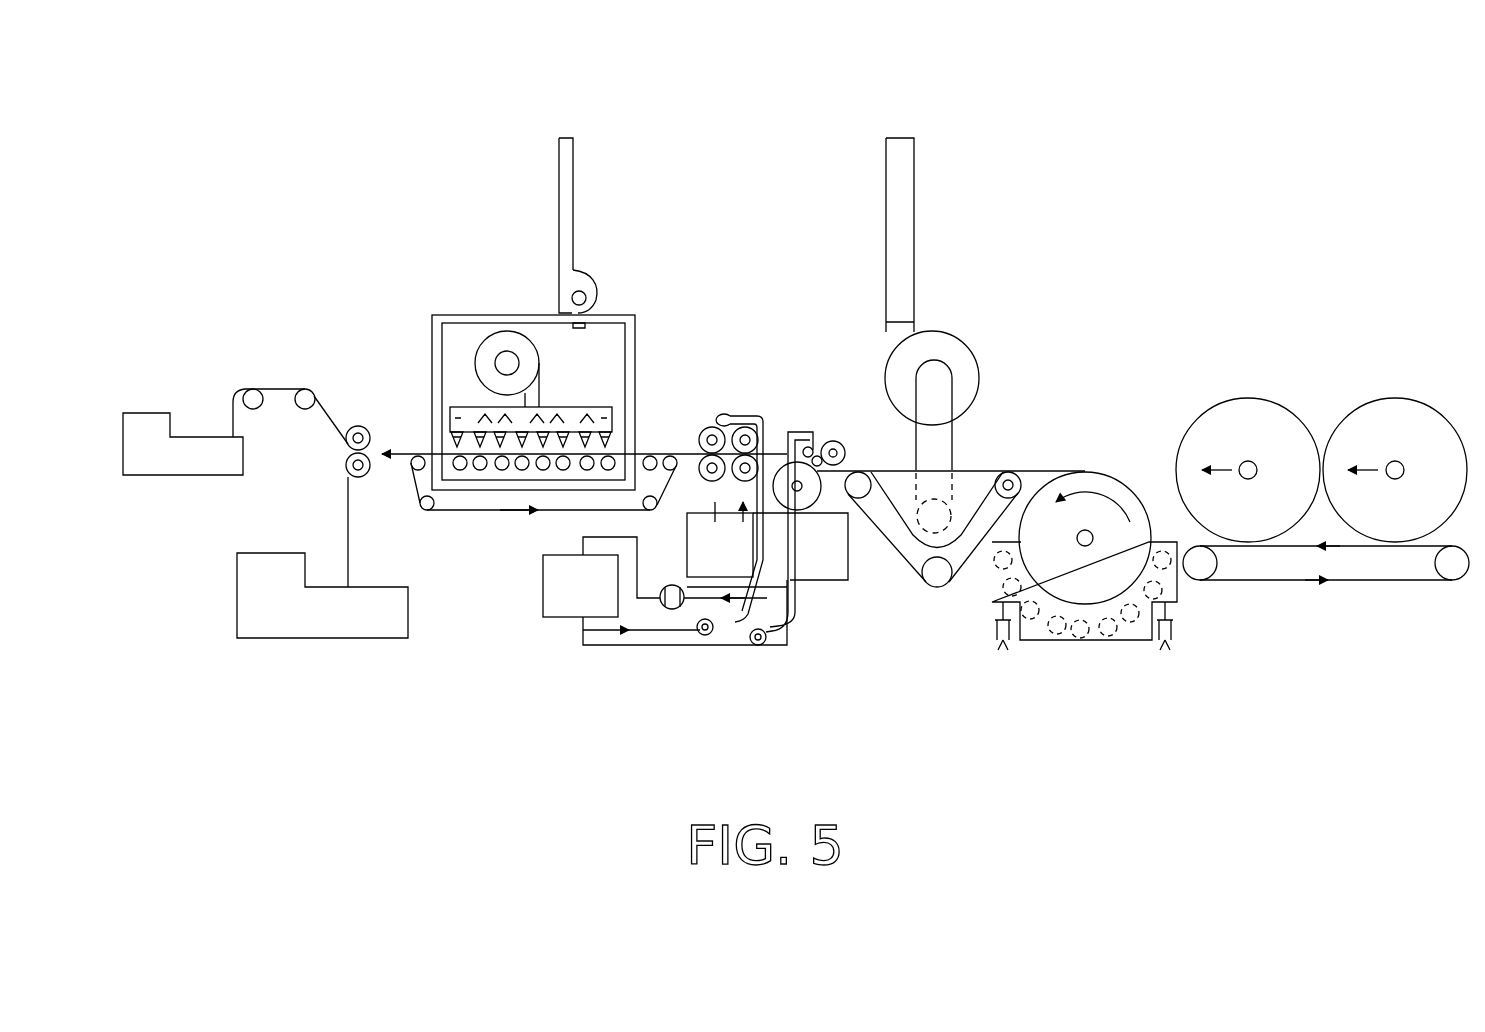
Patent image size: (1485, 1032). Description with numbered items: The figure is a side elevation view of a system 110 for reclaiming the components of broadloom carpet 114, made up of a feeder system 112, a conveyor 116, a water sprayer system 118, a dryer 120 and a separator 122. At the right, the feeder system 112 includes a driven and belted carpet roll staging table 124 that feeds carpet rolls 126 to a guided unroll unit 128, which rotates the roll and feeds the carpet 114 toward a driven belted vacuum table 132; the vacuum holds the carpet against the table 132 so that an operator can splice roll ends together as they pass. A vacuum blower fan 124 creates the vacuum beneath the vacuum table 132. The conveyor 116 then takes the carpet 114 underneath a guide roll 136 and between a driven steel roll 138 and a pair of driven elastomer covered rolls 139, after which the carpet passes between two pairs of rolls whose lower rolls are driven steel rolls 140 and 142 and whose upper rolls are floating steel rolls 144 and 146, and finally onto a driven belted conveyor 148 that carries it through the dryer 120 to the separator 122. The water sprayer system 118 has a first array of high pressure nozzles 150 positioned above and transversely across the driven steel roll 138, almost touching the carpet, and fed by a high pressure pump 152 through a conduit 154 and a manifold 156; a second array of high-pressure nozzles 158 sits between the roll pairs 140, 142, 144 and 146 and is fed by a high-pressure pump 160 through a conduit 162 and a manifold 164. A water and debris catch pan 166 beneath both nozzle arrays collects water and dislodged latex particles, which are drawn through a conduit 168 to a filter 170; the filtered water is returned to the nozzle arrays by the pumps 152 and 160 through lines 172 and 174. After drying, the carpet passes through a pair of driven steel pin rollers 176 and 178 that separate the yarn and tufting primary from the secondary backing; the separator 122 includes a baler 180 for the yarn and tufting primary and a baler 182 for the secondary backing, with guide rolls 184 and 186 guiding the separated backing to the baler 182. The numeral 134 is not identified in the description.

The system for reclaiming broadloom carpet components 110 is at (1034, 281).
The feeder system 112 is at (1177, 395).
The broadloom carpet 114 is at (377, 452).
The conveyor 116 is at (653, 522).
The water sprayer system 118 is at (784, 343).
The dryer 120 is at (451, 311).
The separator 122 is at (341, 394).
The carpet roll staging table 124 is at (1375, 585).
The carpet rolls 126 is at (1195, 455).
The guided unroll unit 128 is at (1120, 642).
The driven belted vacuum table 132 is at (912, 560).
The support arm 134 is at (948, 345).
The guide roll 136 is at (845, 445).
The driven steel roll 138 is at (835, 497).
The driven elastomer covered rolls 139 is at (813, 457).
The driven steel roll 140 is at (766, 452).
The driven steel roll 142 is at (697, 505).
The floating steel roll 144 is at (745, 425).
The floating steel roll 146 is at (703, 430).
The driven belted conveyor 148 is at (492, 512).
The first array of high pressure nozzles 150 is at (808, 508).
The high pressure pump 152 is at (766, 643).
The conduit 154 is at (797, 568).
The manifold 156 is at (807, 432).
The second array of high-pressure nozzles 158 is at (703, 425).
The high-pressure pump 160 is at (708, 636).
The conduit 162 is at (725, 578).
The manifold 164 is at (722, 413).
The water and debris catch pan 166 is at (830, 583).
The conduit 168 is at (590, 525).
The filter 170 is at (603, 600).
The line 172 is at (620, 646).
The line 174 is at (650, 633).
The driven steel pin roller 176 is at (373, 478).
The driven steel pin roller 178 is at (367, 424).
The baler 180 is at (332, 638).
The baler 182 is at (167, 475).
The guide roll 184 is at (307, 410).
The guide roll 186 is at (255, 410).